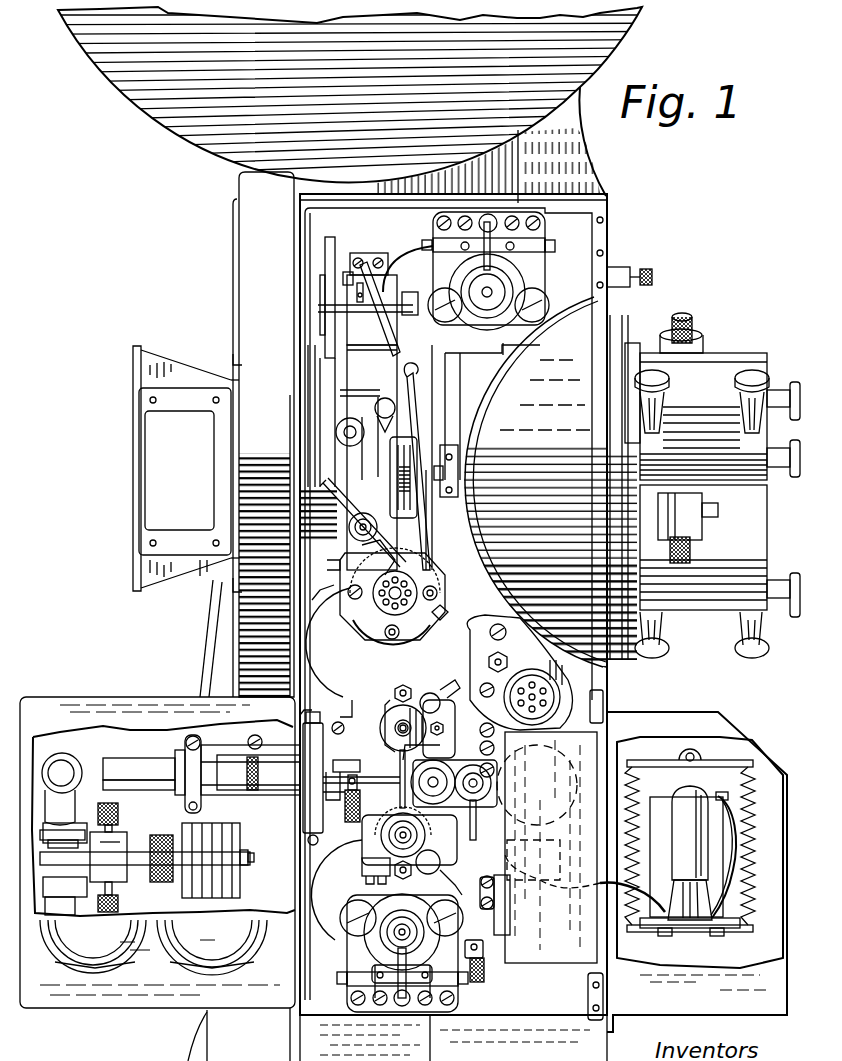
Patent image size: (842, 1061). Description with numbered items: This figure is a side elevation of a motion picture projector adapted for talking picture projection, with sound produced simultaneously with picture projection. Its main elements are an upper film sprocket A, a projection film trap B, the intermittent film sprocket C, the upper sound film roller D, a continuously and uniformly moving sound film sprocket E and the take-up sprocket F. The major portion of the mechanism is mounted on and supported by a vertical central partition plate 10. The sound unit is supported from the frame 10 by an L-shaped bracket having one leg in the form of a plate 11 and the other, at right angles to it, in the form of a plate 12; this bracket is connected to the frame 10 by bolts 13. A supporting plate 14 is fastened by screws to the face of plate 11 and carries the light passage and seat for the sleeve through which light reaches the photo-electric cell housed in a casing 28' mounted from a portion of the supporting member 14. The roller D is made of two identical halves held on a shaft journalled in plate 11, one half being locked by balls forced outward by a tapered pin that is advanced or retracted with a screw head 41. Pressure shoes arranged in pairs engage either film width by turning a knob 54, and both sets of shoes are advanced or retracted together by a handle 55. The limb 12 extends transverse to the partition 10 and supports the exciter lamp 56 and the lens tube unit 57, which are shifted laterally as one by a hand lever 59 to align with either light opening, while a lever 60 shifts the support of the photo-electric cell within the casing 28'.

The vertical central partition plate 10 is at (580, 243).
The plate 11 is at (352, 700).
The plate 12 is at (326, 716).
The bolts 13 is at (496, 902).
The supporting plate 14 is at (472, 755).
The casing 28' is at (551, 847).
The screw head 41 is at (402, 725).
The knob 54 is at (431, 700).
The handle 55 is at (474, 812).
The exciter lamp 56 is at (70, 757).
The lens tube unit 57 is at (357, 768).
The hand lever 59 is at (364, 797).
The lever 60 is at (480, 984).
The upper film sprocket A is at (515, 290).
The projection film trap B is at (423, 402).
The intermittent film sprocket C is at (457, 582).
The upper sound film roller D is at (392, 728).
The sound film sprocket E is at (378, 836).
The take-up sprocket F is at (397, 908).